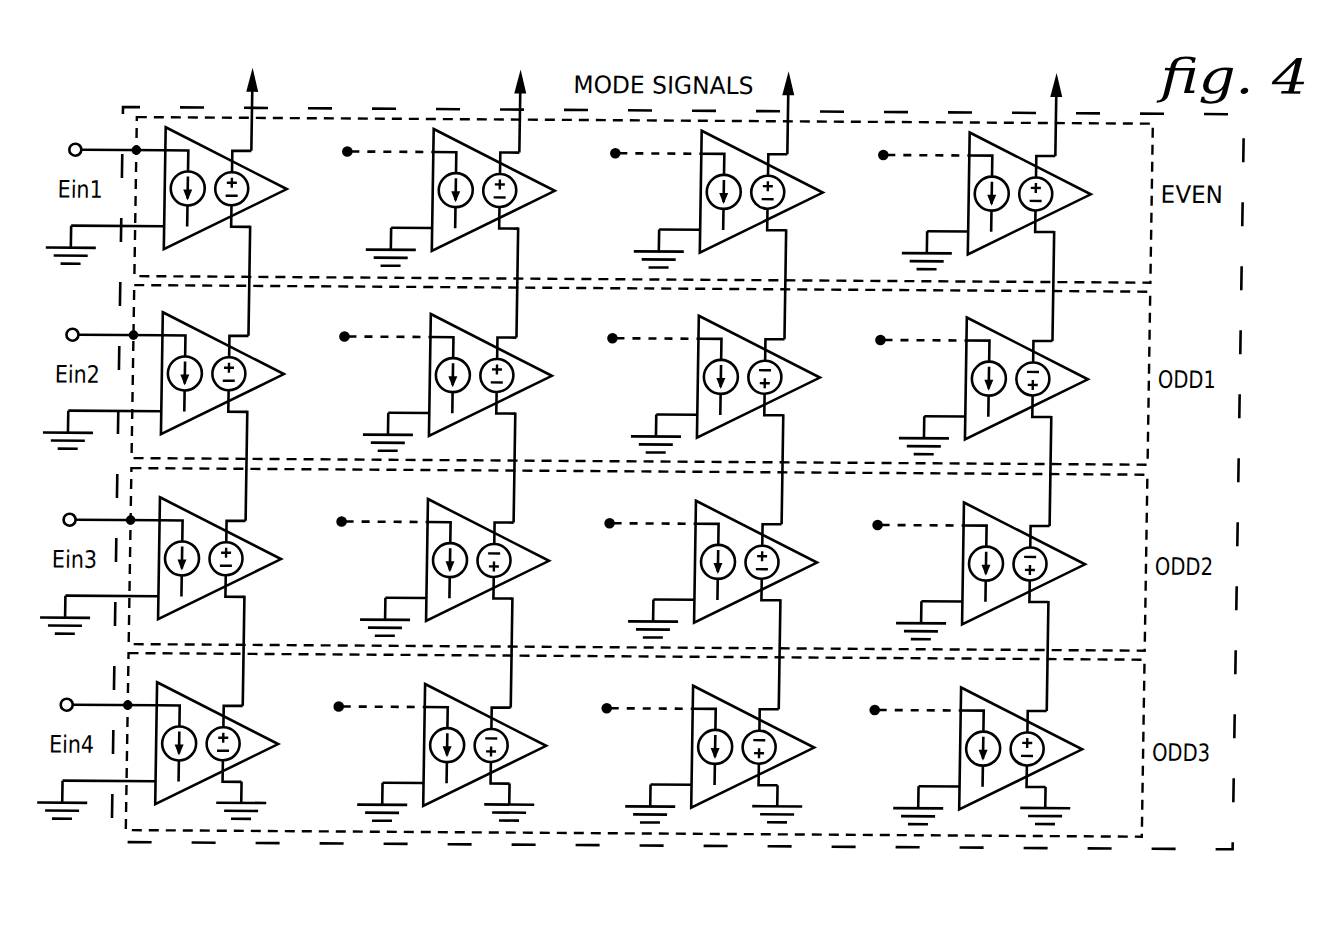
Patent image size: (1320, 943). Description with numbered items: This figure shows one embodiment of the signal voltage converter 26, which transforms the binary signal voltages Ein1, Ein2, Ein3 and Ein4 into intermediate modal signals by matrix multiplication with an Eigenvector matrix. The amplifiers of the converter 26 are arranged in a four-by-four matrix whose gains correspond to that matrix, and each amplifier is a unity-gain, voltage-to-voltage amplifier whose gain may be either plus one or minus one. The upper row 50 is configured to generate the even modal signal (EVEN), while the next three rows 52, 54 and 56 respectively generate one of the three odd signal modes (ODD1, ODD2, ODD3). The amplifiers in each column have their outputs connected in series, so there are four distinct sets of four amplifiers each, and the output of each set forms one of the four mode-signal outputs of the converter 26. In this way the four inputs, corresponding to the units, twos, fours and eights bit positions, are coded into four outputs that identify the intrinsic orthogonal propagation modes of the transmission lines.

The converter 26 is at (213, 100).
The upper row 50 is at (1153, 156).
The row 52 is at (1153, 331).
The row 54 is at (1153, 500).
The row 56 is at (1153, 700).